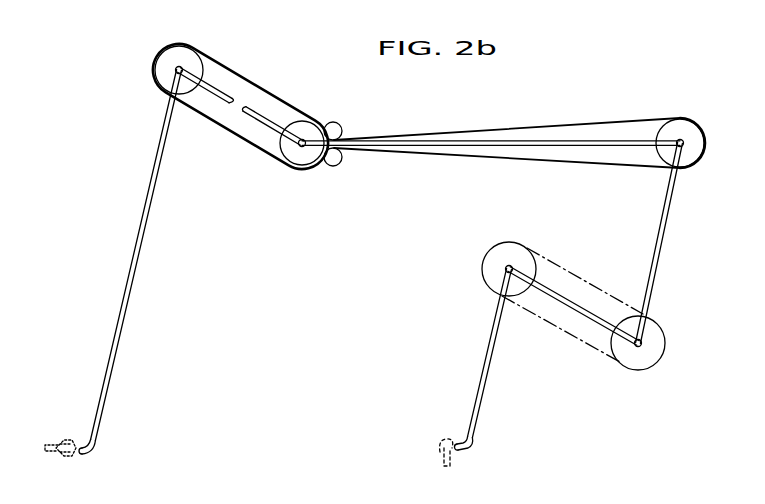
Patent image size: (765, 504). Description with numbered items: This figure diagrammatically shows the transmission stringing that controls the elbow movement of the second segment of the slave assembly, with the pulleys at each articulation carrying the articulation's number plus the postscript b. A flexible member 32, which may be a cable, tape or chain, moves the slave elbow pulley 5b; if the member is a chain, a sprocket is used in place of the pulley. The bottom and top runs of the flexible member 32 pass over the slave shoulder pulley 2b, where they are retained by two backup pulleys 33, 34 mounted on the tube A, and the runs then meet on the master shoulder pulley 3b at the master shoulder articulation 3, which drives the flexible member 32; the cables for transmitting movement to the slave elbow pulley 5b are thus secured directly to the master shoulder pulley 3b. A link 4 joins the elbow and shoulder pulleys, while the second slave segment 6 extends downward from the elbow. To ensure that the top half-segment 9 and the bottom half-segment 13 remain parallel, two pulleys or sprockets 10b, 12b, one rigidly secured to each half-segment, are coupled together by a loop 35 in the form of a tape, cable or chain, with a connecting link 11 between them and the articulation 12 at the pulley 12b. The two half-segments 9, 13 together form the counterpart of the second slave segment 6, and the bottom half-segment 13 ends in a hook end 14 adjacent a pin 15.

The slave elbow pulley 5b is at (190, 51).
The flexible member 32 is at (243, 74).
The link arm 4 is at (228, 102).
The slave shoulder pulley 2b is at (317, 118).
The backup pulley 33 is at (343, 127).
The backup pulley 34 is at (342, 161).
The master shoulder articulation 3 is at (703, 149).
The tube A is at (458, 124).
The master shoulder pulley 3b is at (678, 118).
The top half-segment 9 is at (660, 258).
The pulley 10b is at (637, 362).
The link arm 11 is at (560, 300).
The loop 35 is at (588, 281).
The pulley 12b is at (508, 245).
The articulation 12 is at (500, 276).
The bottom half-segment 13 is at (482, 392).
The hook end 14 is at (470, 446).
The pin 15 is at (446, 434).
The second slave segment 6 is at (146, 232).